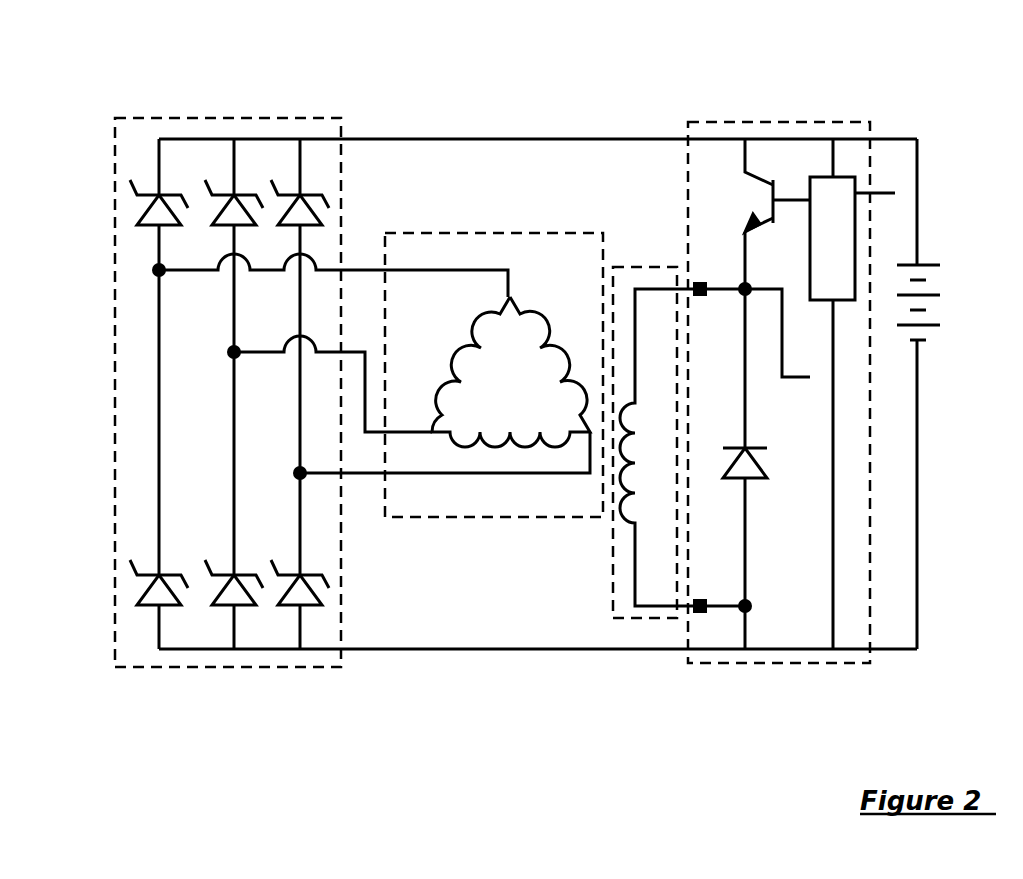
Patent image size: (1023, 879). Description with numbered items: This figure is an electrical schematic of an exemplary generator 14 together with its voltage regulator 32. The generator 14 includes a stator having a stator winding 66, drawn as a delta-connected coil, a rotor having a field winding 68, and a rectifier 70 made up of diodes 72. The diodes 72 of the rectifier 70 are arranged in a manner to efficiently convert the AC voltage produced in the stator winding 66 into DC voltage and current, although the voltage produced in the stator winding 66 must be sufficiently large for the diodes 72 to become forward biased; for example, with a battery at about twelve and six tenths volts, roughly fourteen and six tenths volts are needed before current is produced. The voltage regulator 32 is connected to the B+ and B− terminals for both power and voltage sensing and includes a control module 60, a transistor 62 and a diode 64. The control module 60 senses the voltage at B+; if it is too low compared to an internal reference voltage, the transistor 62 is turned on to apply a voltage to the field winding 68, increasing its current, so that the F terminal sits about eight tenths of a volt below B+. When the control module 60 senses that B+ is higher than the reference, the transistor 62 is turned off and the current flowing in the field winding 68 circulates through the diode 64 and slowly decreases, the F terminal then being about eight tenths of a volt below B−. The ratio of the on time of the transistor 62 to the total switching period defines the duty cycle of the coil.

The generator 14 is at (530, 96).
The voltage regulator 32 is at (838, 120).
The control module 60 is at (857, 228).
The transistor 62 is at (758, 178).
The diode 64 is at (770, 462).
The stator winding 66 is at (502, 233).
The field winding 68 is at (628, 267).
The rectifier 70 is at (277, 118).
The diodes 72 is at (147, 208).